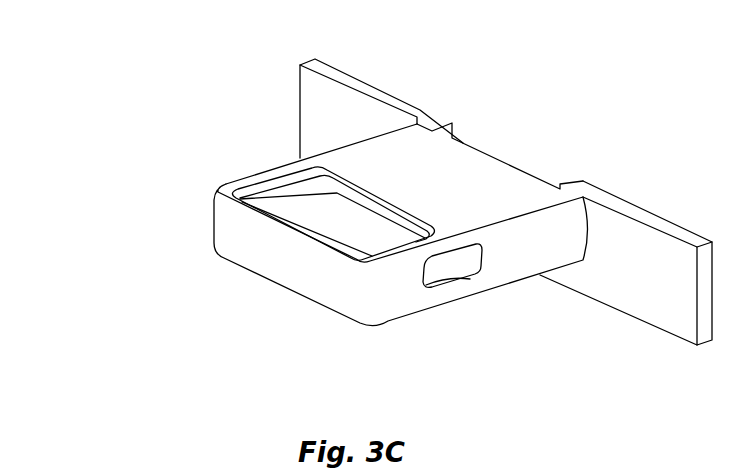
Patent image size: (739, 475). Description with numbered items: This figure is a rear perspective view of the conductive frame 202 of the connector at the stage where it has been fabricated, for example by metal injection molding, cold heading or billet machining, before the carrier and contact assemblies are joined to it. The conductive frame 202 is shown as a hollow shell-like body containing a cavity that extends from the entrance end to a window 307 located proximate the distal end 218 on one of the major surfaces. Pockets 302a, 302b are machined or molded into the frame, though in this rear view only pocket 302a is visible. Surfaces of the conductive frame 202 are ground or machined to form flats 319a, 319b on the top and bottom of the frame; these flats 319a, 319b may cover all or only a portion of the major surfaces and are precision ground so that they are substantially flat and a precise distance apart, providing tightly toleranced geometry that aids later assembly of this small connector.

The conductive frame 202 is at (118, 48).
The distal end 218 is at (318, 282).
The pocket 302a is at (441, 278).
The pocket 302b is at (275, 150).
The window 307 is at (323, 218).
The flat 319a is at (413, 158).
The flat 319b is at (504, 310).